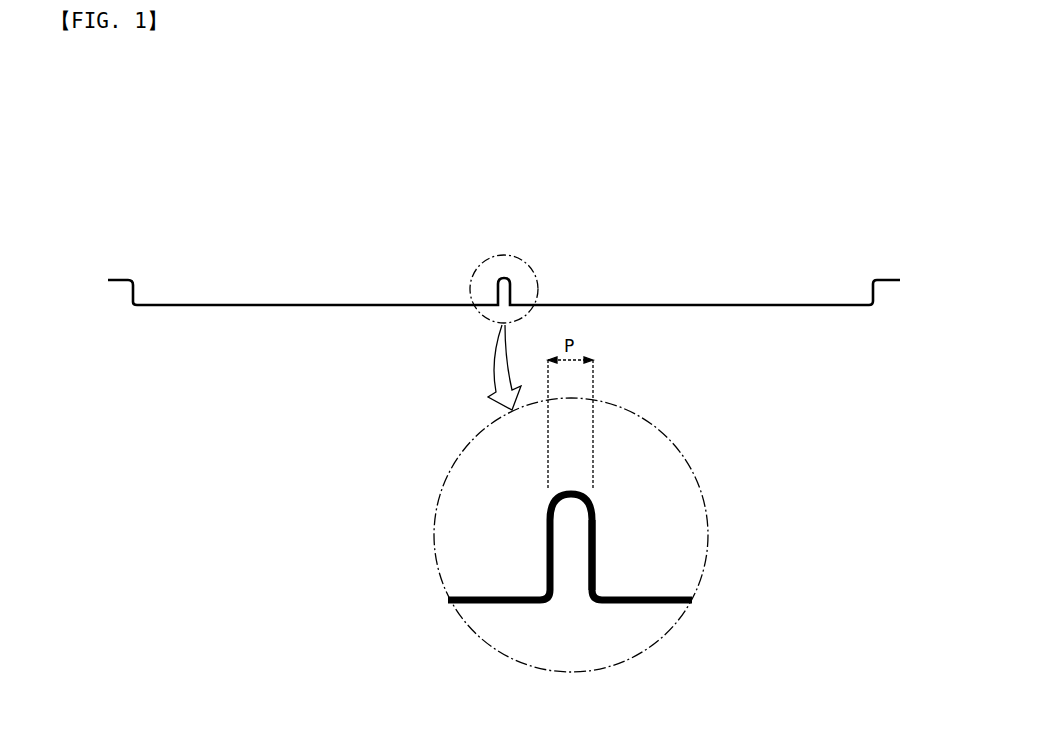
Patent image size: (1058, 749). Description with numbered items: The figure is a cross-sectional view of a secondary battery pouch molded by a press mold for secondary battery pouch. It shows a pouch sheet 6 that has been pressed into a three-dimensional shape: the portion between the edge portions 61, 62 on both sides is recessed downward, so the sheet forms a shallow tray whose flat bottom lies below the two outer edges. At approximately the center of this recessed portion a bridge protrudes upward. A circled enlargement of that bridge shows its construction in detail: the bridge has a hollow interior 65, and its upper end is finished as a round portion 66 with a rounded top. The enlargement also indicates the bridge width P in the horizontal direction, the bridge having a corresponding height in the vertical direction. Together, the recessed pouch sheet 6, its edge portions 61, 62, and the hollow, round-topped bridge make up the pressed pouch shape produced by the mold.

The pouch sheet 6 is at (505, 224).
The edge portion 61 is at (122, 278).
The edge portion 62 is at (887, 278).
The hollow interior 65 is at (570, 586).
The round portion 66 is at (571, 490).